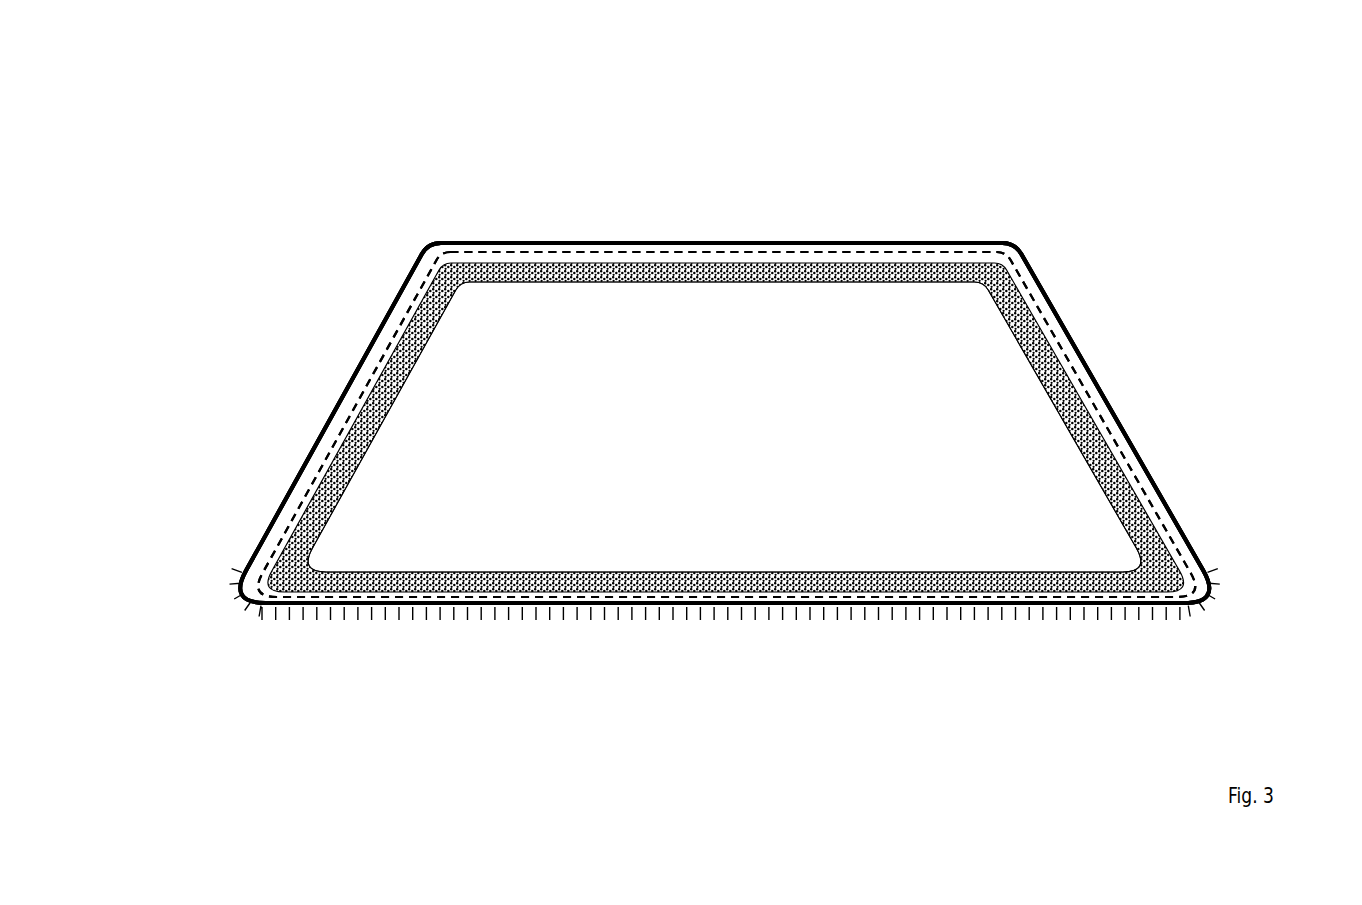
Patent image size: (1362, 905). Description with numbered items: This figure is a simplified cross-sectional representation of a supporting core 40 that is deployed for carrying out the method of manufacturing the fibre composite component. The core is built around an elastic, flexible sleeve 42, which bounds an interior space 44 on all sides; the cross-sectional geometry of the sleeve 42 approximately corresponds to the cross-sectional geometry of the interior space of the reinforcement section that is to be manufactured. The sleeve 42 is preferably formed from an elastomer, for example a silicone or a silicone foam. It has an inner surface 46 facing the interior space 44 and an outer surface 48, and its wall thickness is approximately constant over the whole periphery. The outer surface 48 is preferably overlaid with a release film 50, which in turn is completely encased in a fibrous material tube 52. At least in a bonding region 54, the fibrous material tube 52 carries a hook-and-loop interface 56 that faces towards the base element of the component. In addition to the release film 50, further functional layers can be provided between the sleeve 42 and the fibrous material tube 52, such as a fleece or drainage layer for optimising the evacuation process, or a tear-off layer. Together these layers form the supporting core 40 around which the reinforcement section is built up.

The supporting core 40 is at (356, 213).
The sleeve 42 is at (352, 410).
The interior space 44 is at (725, 431).
The inner surface 46 is at (345, 490).
The outer surface 48 is at (298, 483).
The release film 50 is at (938, 252).
The fibrous material tube 52 is at (1075, 335).
The bonding region 54 is at (410, 277).
The hook-and-loop interface 56 is at (643, 618).